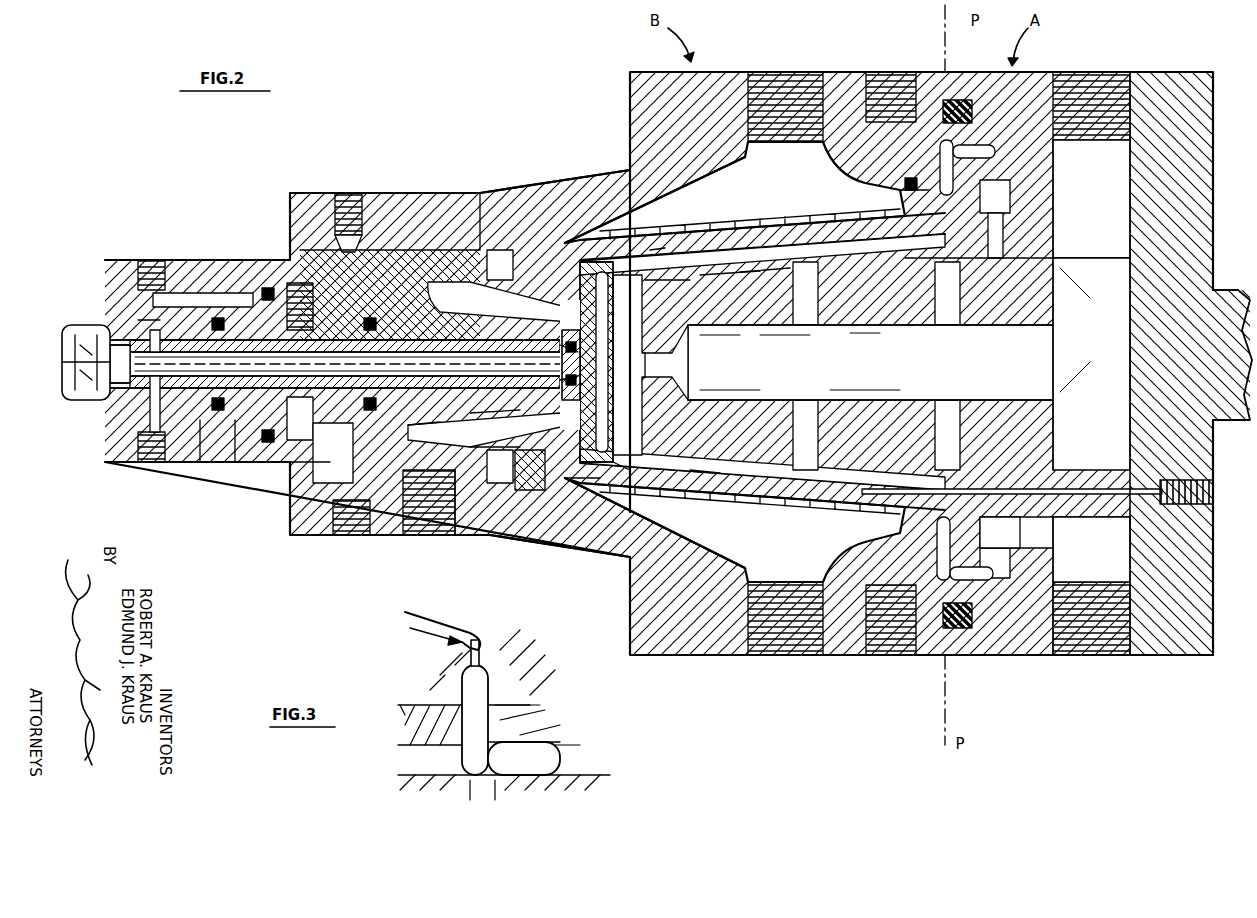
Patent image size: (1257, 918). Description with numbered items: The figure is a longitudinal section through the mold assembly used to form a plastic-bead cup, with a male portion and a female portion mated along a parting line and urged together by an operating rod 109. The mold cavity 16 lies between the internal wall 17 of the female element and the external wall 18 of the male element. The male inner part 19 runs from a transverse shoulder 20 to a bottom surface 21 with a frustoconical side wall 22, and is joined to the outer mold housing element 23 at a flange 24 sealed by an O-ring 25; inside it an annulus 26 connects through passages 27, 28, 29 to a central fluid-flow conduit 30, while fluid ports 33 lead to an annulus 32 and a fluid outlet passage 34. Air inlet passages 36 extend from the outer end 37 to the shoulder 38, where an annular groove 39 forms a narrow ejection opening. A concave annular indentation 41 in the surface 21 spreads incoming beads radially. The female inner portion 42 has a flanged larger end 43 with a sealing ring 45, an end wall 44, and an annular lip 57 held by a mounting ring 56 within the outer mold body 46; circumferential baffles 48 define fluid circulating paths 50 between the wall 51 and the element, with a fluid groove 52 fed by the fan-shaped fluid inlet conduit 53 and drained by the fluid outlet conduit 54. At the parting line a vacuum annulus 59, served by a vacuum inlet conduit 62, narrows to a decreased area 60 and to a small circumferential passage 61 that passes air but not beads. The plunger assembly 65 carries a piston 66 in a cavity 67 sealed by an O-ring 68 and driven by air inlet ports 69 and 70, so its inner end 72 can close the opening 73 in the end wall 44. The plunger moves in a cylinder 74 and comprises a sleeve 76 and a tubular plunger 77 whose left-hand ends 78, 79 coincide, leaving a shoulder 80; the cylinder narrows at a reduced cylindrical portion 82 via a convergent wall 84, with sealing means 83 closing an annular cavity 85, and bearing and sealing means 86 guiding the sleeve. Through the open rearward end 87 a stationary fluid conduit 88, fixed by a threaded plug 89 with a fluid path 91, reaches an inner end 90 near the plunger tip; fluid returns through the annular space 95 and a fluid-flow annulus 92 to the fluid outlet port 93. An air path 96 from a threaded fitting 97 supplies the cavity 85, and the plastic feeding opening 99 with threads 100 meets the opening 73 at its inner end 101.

In FIG. 2, the mold cavity 16 is at (702, 238).
In FIG. 3, the mold cavity 16 is at (415, 628).
In FIG. 2, the internal wall 17 is at (650, 280).
In FIG. 2, the external wall 18 is at (592, 258).
In FIG. 2, the inner part 19 is at (724, 272).
In FIG. 2, the transverse shoulder 20 is at (1000, 233).
In FIG. 2, the transverse bottom surface 21 is at (568, 248).
In FIG. 2, the side wall 22 is at (610, 500).
In FIG. 2, the outer mold housing element 23 is at (1182, 70).
In FIG. 2, the flange 24 is at (990, 190).
In FIG. 2, the O-ring 25 is at (950, 190).
In FIG. 2, the annulus 26 is at (760, 270).
In FIG. 2, the passage 27 is at (672, 363).
In FIG. 2, the passage 28 is at (805, 300).
In FIG. 2, the passage 29 is at (950, 300).
In FIG. 2, the central fluid-flow conduit 30 is at (909, 364).
In FIG. 2, the annulus 32 is at (1000, 192).
In FIG. 2, the fluid ports 33 is at (1000, 215).
In FIG. 2, the fluid outlet passage 34 is at (1120, 650).
In FIG. 2, the air inlet passages 36 is at (1135, 489).
In FIG. 2, the outer end 37 is at (1213, 590).
In FIG. 2, the shoulder 38 is at (812, 508).
In FIG. 2, the annular groove 39 is at (862, 489).
In FIG. 2, the concave annular indentation 41 is at (640, 390).
In FIG. 2, the inner portion 42 is at (630, 548).
In FIG. 2, the flanged larger end 43 is at (920, 188).
In FIG. 2, the end wall 44 is at (580, 482).
In FIG. 2, the sealing ring 45 is at (935, 185).
In FIG. 2, the outer mold body 46 is at (620, 95).
In FIG. 2, the circumferential baffles 48 is at (700, 485).
In FIG. 2, the fluid circulating paths 50 is at (775, 215).
In FIG. 2, the wall 51 is at (665, 250).
In FIG. 2, the fluid groove 52 is at (545, 250).
In FIG. 2, the fluid inlet conduit 53 is at (800, 95).
In FIG. 2, the fluid outlet conduit 54 is at (775, 650).
In FIG. 2, the mounting ring 56 is at (532, 535).
In FIG. 2, the annular lip 57 is at (535, 492).
In FIG. 2, the vacuum annulus 59 is at (910, 570).
In FIG. 3, the vacuum annulus 59 is at (450, 762).
In FIG. 2, the decreased area 60 is at (960, 578).
In FIG. 3, the decreased area 60 is at (480, 712).
In FIG. 2, the circumferential passage 61 is at (1000, 532).
In FIG. 3, the circumferential passage 61 is at (480, 655).
In FIG. 2, the vacuum inlet conduit 62 is at (893, 80).
In FIG. 2, the plunger assembly 65 is at (215, 442).
In FIG. 2, the piston 66 is at (250, 290).
In FIG. 2, the cavity 67 is at (305, 300).
In FIG. 2, the O-ring 68 is at (240, 442).
In FIG. 2, the air inlet port 69 is at (205, 282).
In FIG. 2, the second air inlet port 70 is at (350, 458).
In FIG. 2, the inner end 72 is at (578, 372).
In FIG. 2, the opening 73 is at (585, 365).
In FIG. 2, the cylinder 74 is at (370, 332).
In FIG. 2, the sleeve 76 is at (222, 300).
In FIG. 2, the tubular plunger 77 is at (175, 293).
In FIG. 2, the left-hand end 78 is at (148, 335).
In FIG. 2, the left-hand end 79 is at (140, 320).
In FIG. 2, the shoulder 80 is at (410, 394).
In FIG. 2, the reduced cylindrical portion 82 is at (512, 278).
In FIG. 2, the sealing means 83 is at (520, 445).
In FIG. 2, the convergent wall 84 is at (470, 320).
In FIG. 2, the annular cavity 85 is at (440, 395).
In FIG. 2, the bearing and sealing means 86 is at (298, 470).
In FIG. 2, the open rearward end 87 is at (125, 400).
In FIG. 2, the fluid conduit 88 is at (128, 390).
In FIG. 2, the threaded plug 89 is at (65, 375).
In FIG. 2, the inner end 90 is at (470, 394).
In FIG. 2, the fluid path 91 is at (85, 358).
In FIG. 2, the fluid-flow annulus 92 is at (118, 420).
In FIG. 2, the fluid outlet port 93 is at (150, 447).
In FIG. 2, the plastic feeding path 95 is at (420, 485).
In FIG. 2, the air path 96 is at (380, 258).
In FIG. 2, the threaded fitting 97 is at (345, 210).
In FIG. 2, the opening 99 is at (430, 500).
In FIG. 2, the threads 100 is at (465, 537).
In FIG. 2, the inner end 101 is at (530, 445).
In FIG. 2, the operating rod 109 is at (1232, 300).